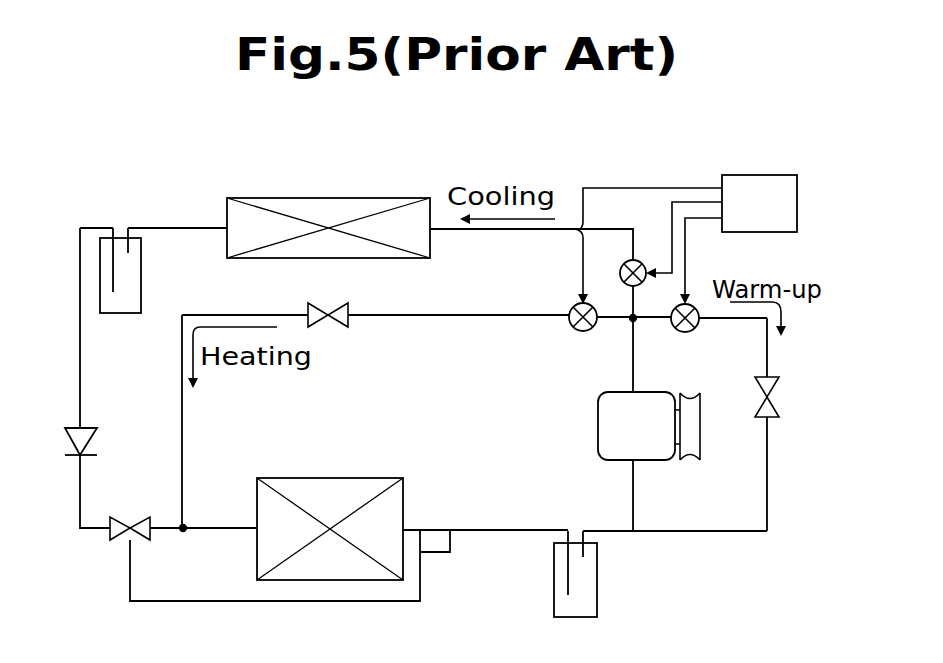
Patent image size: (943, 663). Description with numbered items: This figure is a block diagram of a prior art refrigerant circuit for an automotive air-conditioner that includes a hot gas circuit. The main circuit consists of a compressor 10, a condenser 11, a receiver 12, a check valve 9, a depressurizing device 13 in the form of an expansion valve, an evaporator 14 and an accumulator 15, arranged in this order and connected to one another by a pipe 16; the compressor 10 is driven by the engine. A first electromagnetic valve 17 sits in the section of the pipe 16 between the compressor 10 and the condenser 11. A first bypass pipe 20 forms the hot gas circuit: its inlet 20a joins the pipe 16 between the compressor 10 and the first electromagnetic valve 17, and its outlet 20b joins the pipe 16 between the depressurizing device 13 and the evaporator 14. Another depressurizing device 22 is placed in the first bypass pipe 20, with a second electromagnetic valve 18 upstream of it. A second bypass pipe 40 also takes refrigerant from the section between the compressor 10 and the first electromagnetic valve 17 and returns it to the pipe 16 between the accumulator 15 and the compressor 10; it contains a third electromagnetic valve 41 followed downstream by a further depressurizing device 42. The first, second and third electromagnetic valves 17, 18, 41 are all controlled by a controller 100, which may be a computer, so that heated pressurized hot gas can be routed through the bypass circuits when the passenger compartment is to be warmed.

The check valve 9 is at (65, 441).
The compressor 10 is at (616, 426).
The condenser 11 is at (358, 208).
The receiver 12 is at (134, 284).
The depressurizing device (expansion valve) 13 is at (133, 517).
The evaporator 14 is at (358, 490).
The accumulator 15 is at (588, 595).
The pipe 16 is at (494, 534).
The first electromagnetic valve 17 is at (621, 271).
The second electromagnetic valve 18 is at (574, 308).
The first bypass pipe 20 is at (405, 318).
The inlet 20a is at (630, 322).
The outlet 20b is at (185, 526).
The depressurizing device 22 is at (348, 311).
The second bypass pipe 40 is at (767, 362).
The third electromagnetic valve 41 is at (689, 331).
The depressurizing device 42 is at (774, 410).
The controller 100 is at (797, 193).